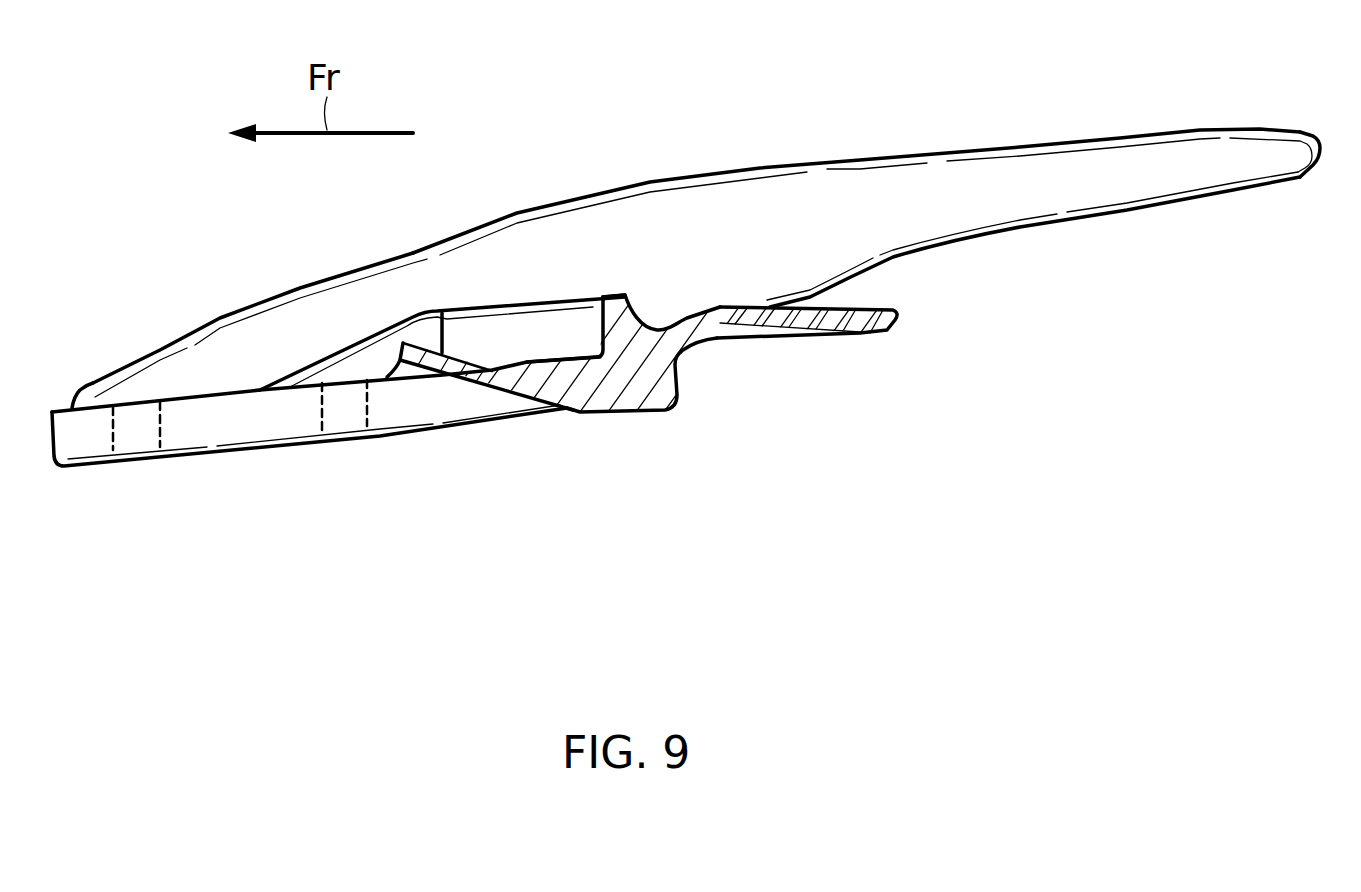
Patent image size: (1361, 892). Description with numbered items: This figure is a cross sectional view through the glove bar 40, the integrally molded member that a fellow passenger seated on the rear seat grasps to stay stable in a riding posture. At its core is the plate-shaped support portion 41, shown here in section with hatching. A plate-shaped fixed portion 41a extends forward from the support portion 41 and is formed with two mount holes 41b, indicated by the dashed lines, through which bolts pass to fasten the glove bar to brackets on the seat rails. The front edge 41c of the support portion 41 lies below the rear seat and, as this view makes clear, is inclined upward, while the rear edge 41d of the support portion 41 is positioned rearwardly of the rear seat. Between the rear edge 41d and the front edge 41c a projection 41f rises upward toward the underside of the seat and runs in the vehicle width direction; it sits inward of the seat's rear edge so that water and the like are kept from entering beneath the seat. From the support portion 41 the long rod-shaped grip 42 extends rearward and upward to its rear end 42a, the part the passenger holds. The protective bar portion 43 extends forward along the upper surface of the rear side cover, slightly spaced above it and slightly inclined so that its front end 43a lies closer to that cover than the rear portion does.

The glove bar 40 is at (824, 96).
The support portion 41 is at (538, 368).
The fixed portion 41a is at (227, 413).
The mount hole 41b is at (117, 443).
The front edge 41c is at (388, 347).
The rear edge 41d is at (882, 333).
The projection 41f is at (612, 295).
The grip 42 is at (1022, 147).
The rear end 42a is at (1312, 143).
The protective bar portion 43 is at (290, 303).
The front end 43a is at (95, 397).